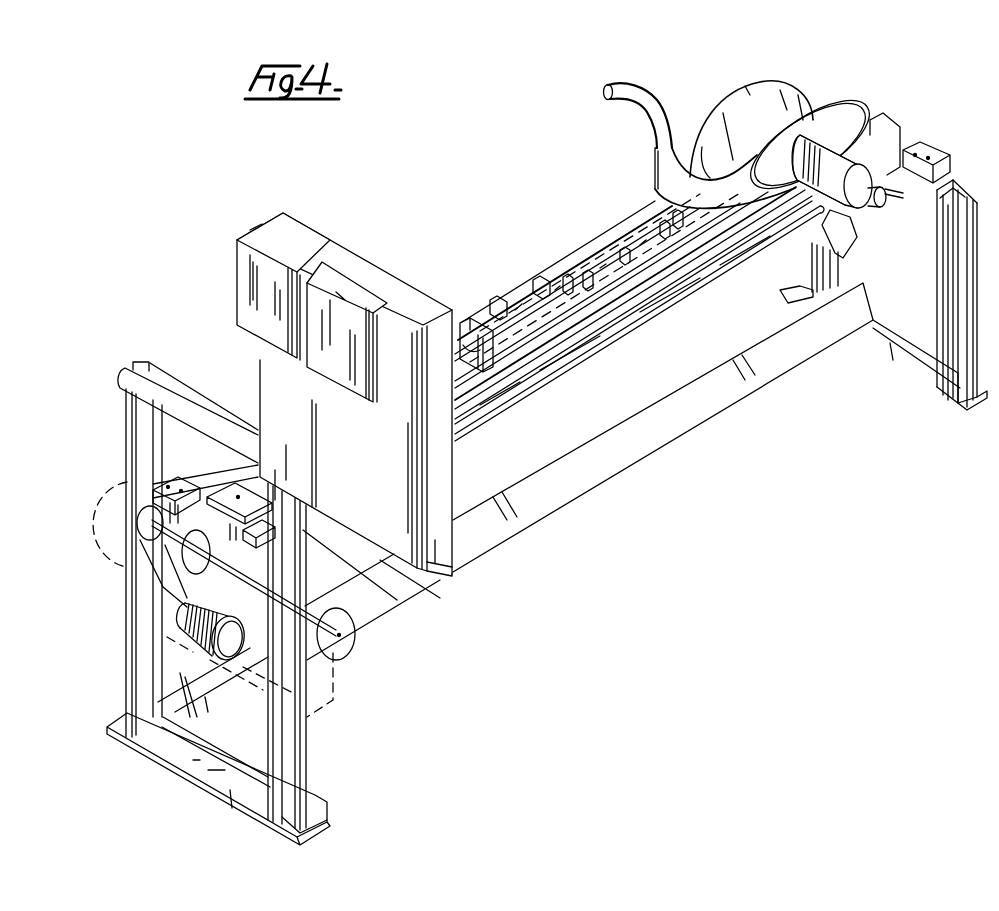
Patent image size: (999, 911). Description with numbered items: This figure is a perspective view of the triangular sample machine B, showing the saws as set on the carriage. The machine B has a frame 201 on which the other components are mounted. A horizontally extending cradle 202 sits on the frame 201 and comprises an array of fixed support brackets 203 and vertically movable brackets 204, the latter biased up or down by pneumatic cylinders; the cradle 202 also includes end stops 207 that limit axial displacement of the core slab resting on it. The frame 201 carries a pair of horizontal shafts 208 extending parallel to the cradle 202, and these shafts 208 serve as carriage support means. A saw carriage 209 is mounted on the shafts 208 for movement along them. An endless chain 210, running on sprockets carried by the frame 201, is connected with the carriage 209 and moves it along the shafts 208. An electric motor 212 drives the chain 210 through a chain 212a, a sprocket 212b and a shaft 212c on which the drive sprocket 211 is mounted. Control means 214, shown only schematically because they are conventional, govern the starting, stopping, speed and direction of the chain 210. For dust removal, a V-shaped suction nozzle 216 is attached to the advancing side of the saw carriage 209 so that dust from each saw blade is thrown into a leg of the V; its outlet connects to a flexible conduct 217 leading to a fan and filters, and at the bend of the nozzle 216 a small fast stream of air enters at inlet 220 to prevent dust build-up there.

The frame 201 is at (142, 362).
The cradle 202 is at (540, 340).
The fixed support brackets 203 is at (586, 282).
The vertically movable brackets 204 is at (573, 283).
The end stops 207 is at (462, 340).
The horizontal shafts 208 is at (218, 460).
The saw carriage 209 is at (848, 212).
The endless chain 210 is at (612, 322).
The drive sprocket 211 is at (180, 560).
The electric motor 212 is at (183, 650).
The chain 212a is at (160, 604).
The sprocket 212b is at (137, 528).
The shaft 212c is at (250, 588).
The control means 214 is at (240, 282).
The V-shaped suction nozzle 216 is at (692, 170).
The flexible conduct 217 is at (628, 99).
The inlet 220 is at (655, 187).
The machine B is at (623, 530).